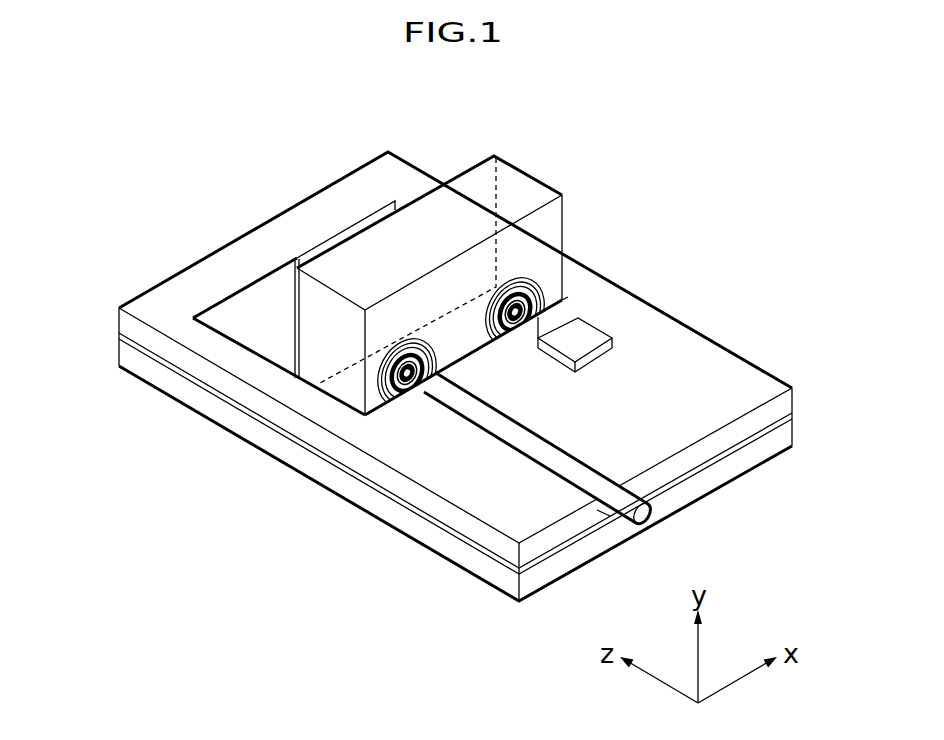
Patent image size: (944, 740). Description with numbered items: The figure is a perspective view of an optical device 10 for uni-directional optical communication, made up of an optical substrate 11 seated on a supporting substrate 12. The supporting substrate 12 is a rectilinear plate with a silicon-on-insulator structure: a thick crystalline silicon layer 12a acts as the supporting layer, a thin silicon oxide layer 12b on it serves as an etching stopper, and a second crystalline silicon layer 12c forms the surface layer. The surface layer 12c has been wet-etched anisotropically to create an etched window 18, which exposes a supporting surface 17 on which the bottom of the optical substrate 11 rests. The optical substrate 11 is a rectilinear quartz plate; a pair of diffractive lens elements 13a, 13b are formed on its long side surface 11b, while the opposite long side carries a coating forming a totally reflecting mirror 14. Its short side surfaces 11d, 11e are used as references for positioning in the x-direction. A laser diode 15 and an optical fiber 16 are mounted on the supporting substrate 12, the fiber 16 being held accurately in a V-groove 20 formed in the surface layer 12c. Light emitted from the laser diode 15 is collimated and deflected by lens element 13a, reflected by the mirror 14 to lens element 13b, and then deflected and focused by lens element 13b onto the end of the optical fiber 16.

The optical device 10 is at (676, 155).
The optical substrate 11 is at (417, 299).
The side surface 11b is at (553, 240).
The side surface 11d is at (564, 196).
The side surface 11e is at (325, 343).
The supporting substrate 12 is at (455, 418).
The crystalline silicon layer 12a is at (430, 528).
The silicon oxide layer 12b is at (393, 497).
The crystalline silicon layer 12c is at (722, 367).
The diffractive lens element 13a is at (540, 283).
The diffractive lens element 13b is at (393, 383).
The totally reflecting mirror 14 is at (465, 168).
The laser diode 15 is at (588, 340).
The optical fiber 16 is at (648, 516).
The supporting surface 17 is at (248, 332).
The etched window 18 is at (267, 315).
The V-groove 20 is at (597, 514).